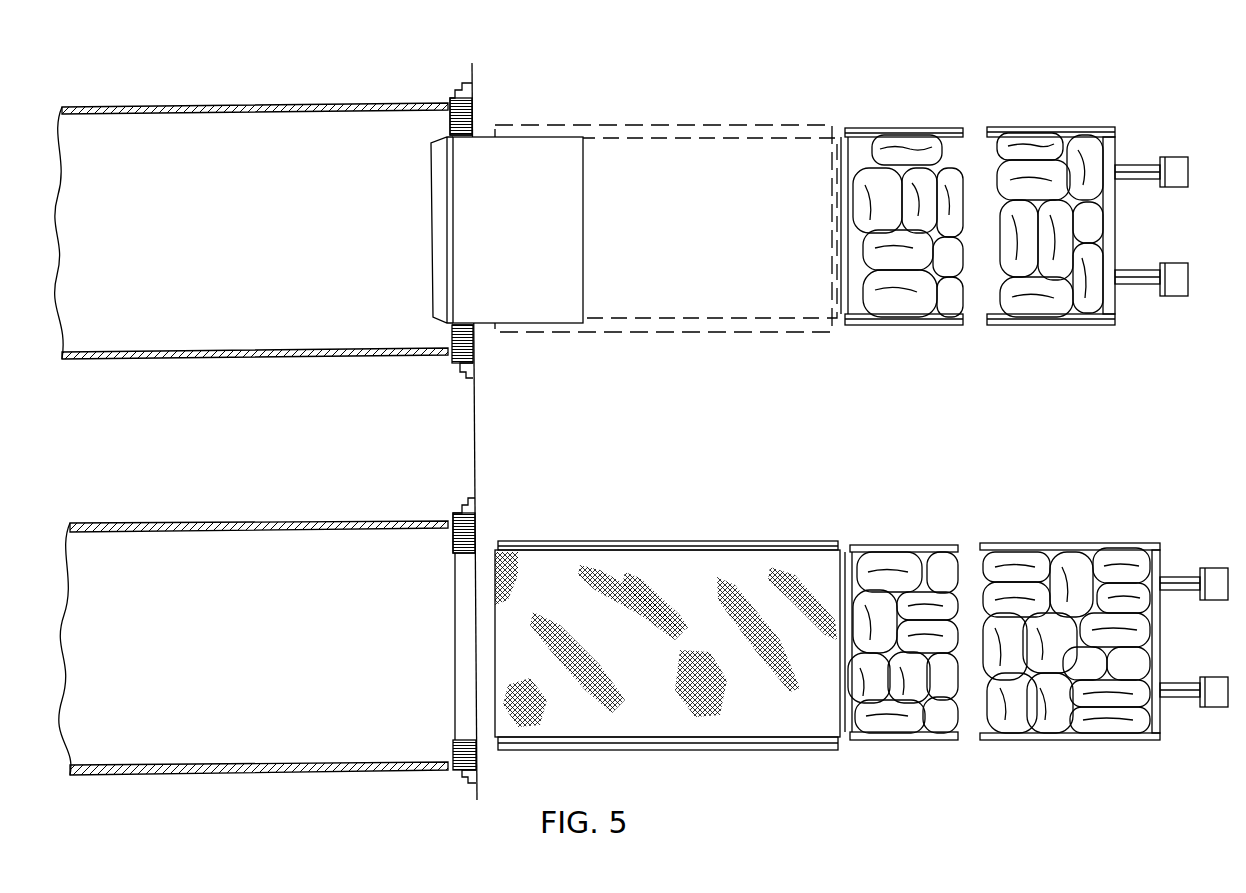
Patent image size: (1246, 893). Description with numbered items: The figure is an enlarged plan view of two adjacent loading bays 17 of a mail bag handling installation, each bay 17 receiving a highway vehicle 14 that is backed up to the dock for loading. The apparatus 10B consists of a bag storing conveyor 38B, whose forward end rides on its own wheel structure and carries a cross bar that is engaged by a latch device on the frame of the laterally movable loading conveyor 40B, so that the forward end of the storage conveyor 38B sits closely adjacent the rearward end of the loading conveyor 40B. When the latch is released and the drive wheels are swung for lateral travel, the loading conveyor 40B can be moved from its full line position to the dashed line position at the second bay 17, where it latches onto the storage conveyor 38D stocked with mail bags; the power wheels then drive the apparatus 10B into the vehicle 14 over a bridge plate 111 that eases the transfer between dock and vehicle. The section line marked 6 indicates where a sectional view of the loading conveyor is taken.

The highway vehicle 14 is at (349, 94).
The bay 17 is at (549, 93).
The bridge plate 111 is at (557, 157).
The storage conveyor 38D is at (1046, 104).
The loading conveyor 40B is at (817, 519).
The apparatus embodiment 10B is at (1019, 491).
The storage conveyor 38B is at (1134, 526).
The section line 6- 6 is at (787, 773).